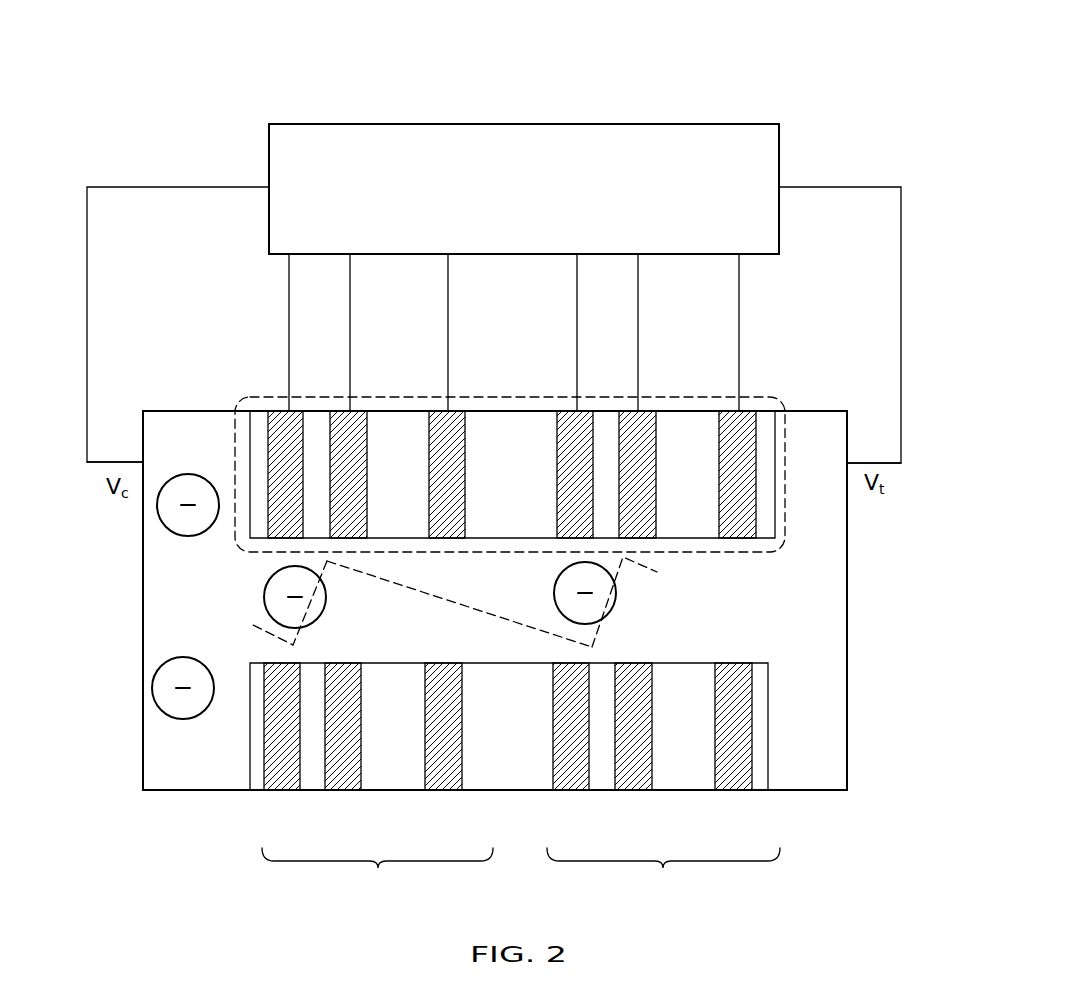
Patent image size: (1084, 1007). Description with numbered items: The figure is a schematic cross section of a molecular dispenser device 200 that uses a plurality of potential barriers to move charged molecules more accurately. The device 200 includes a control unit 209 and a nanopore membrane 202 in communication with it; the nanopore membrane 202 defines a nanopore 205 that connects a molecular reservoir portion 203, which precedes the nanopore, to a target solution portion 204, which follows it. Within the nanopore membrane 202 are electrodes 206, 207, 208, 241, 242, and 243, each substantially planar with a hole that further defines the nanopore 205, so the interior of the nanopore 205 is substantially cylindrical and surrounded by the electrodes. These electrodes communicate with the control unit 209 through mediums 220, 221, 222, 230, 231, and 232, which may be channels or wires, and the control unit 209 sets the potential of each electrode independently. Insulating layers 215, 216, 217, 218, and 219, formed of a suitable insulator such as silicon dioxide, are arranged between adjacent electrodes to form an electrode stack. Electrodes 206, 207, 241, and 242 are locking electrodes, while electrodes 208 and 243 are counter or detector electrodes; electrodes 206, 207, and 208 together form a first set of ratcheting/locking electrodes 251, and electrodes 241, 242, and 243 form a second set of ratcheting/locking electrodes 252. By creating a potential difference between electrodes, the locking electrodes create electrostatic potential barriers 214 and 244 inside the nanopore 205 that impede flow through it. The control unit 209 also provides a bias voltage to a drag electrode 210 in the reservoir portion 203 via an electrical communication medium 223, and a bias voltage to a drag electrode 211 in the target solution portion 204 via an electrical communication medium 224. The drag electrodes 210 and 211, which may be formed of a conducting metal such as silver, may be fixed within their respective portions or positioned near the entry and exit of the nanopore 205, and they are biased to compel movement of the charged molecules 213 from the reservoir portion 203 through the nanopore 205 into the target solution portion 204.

The device 200 is at (716, 49).
The nanopore membrane 202 is at (478, 396).
The molecular reservoir portion 203 is at (211, 768).
The target solution portion 204 is at (821, 768).
The nanopore 205 is at (267, 563).
The electrode 206 is at (284, 785).
The electrode 207 is at (353, 785).
The electrode 208 is at (446, 785).
The control unit 209 is at (565, 123).
The electrode 210 is at (134, 443).
The electrode 211 is at (857, 441).
The charged molecule 213 is at (164, 479).
The electrostatic potential barrier 214 is at (296, 640).
The insulating layer 215 is at (318, 785).
The insulating layer 216 is at (399, 785).
The insulating layer 217 is at (512, 785).
The insulating layer 218 is at (604, 785).
The insulating layer 219 is at (684, 785).
The medium 220 is at (289, 294).
The medium 221 is at (350, 294).
The medium 222 is at (448, 294).
The electrical communication medium 223 is at (188, 187).
The electrical communication medium 224 is at (828, 187).
The medium 230 is at (577, 294).
The medium 231 is at (638, 294).
The medium 232 is at (739, 294).
The electrode 241 is at (569, 785).
The electrode 242 is at (638, 785).
The electrode 243 is at (732, 785).
The electrostatic potential barrier 244 is at (596, 642).
The first set of ratcheting/locking electrodes 251 is at (377, 872).
The second set of ratcheting/locking electrodes 252 is at (663, 872).